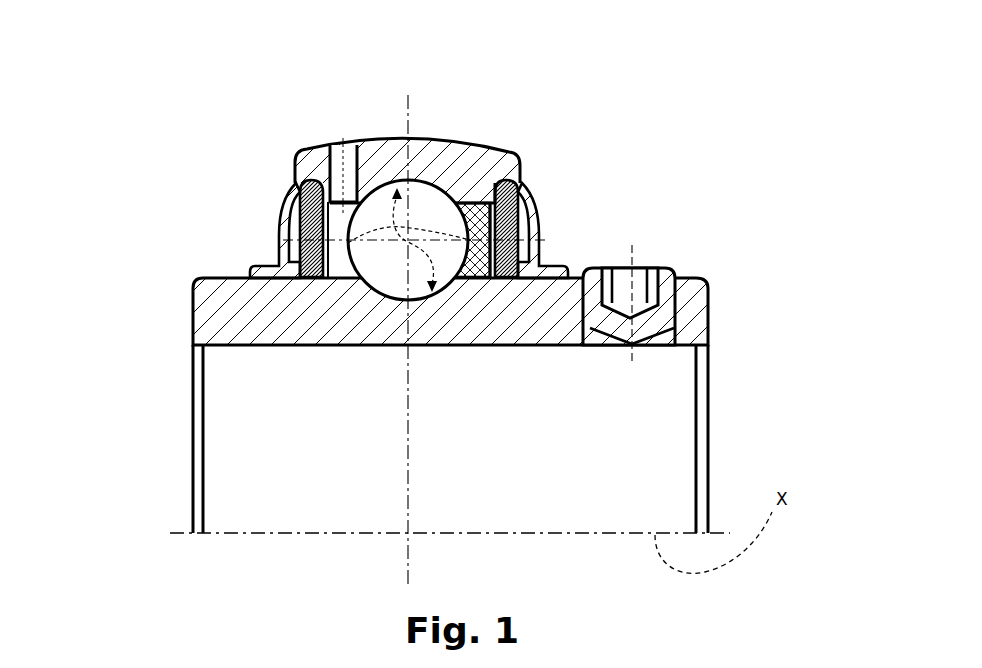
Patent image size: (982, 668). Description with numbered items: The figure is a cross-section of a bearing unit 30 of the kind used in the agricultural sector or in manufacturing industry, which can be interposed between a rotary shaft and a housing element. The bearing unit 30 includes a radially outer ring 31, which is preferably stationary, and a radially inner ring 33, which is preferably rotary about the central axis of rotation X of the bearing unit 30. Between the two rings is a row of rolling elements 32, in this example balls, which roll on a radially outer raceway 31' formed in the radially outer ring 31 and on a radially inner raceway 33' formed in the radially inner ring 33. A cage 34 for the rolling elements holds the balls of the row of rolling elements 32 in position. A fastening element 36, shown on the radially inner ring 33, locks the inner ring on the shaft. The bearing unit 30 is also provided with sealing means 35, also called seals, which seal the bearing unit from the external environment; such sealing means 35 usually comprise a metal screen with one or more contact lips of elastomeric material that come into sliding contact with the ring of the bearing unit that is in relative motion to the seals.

The bearing unit 30 is at (648, 80).
The radially outer ring 31 is at (396, 143).
The radially outer raceway 31' is at (210, 230).
The rolling elements 32 is at (417, 180).
The radially inner ring 33 is at (417, 405).
The radially inner raceway 33' is at (171, 407).
The cage 34 is at (490, 200).
The sealing means 35 is at (290, 200).
The fastening element 36 is at (632, 292).